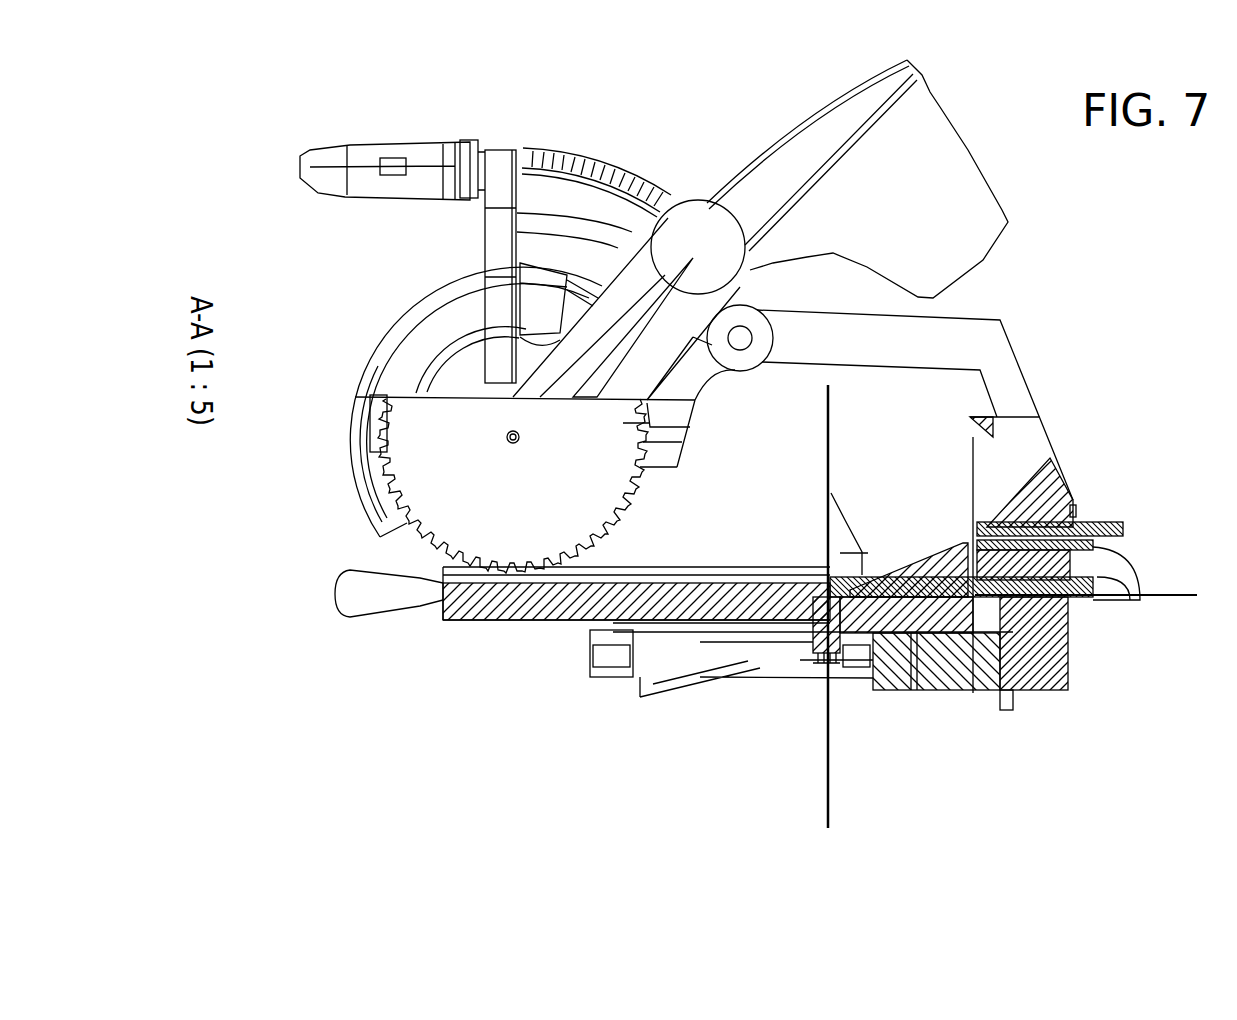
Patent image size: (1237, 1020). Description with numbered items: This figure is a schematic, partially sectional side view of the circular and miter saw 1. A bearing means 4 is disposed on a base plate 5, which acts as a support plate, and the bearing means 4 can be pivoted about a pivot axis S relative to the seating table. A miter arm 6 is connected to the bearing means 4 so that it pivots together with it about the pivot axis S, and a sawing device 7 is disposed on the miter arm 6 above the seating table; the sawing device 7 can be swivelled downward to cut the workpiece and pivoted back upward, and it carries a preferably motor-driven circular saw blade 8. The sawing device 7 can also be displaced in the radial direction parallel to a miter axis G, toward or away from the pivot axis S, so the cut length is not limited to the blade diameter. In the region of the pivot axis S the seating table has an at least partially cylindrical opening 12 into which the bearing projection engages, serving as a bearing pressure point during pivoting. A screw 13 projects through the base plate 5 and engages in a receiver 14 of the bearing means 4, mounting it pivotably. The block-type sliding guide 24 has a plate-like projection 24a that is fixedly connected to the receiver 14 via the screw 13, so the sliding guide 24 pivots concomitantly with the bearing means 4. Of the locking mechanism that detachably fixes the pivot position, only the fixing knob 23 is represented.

The circular and miter saw 1 is at (273, 538).
The bearing means 4 is at (795, 608).
The base plate 5 is at (687, 623).
The miter arm 6 is at (1027, 368).
The sawing device 7 is at (332, 440).
The saw blade 8 is at (597, 493).
The opening 12 is at (930, 560).
The screw 13 is at (815, 607).
The receiver 14 is at (843, 648).
The fixing knob 23 is at (945, 563).
The sliding guide 24 is at (998, 627).
The plate-like projection 24a is at (875, 635).
The miter axis G is at (1168, 594).
The pivot axis S is at (830, 785).